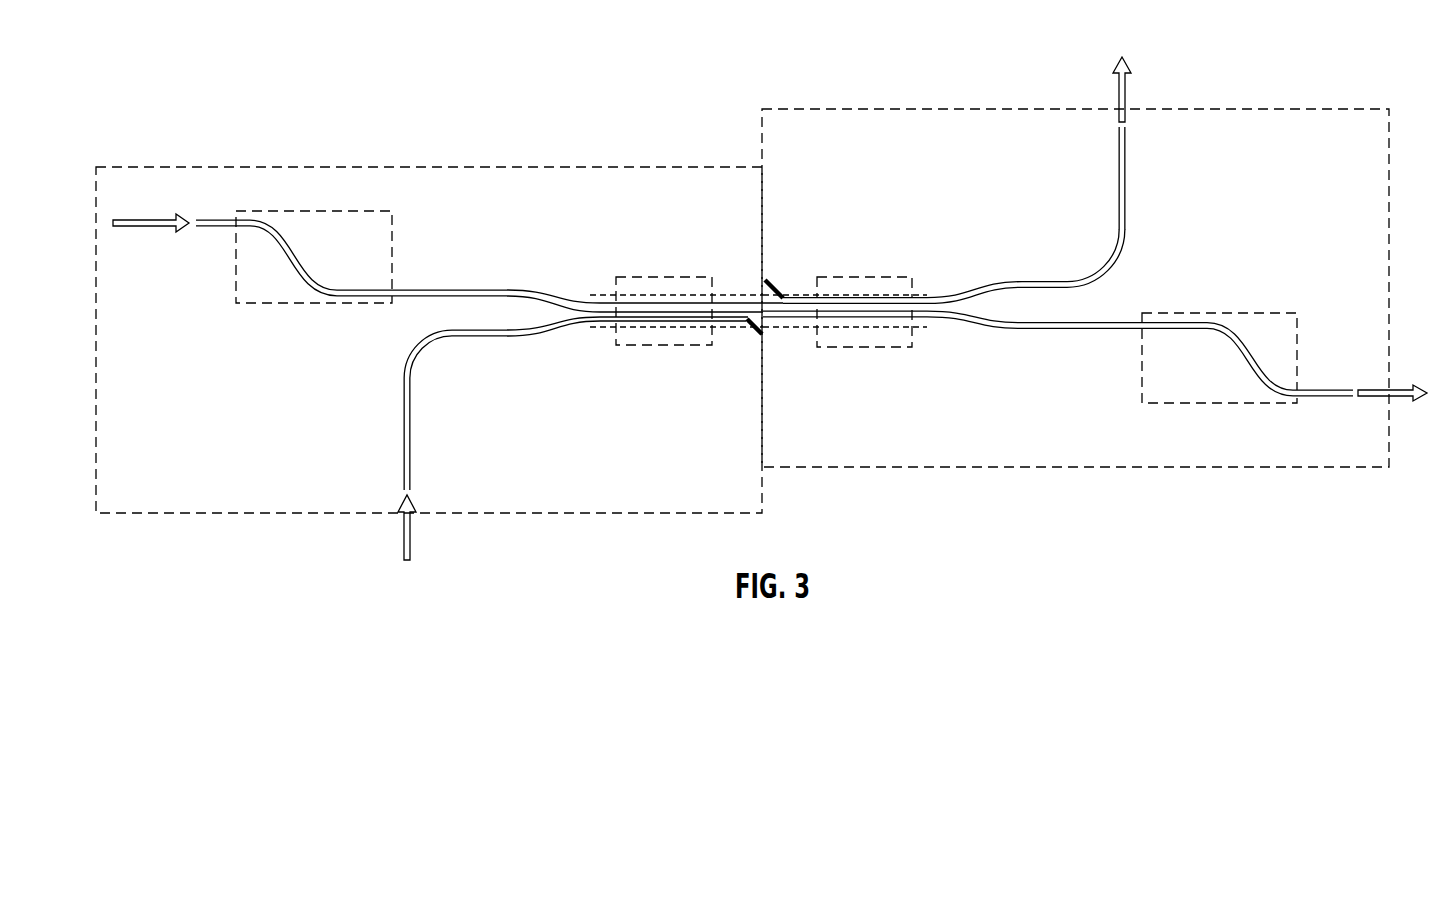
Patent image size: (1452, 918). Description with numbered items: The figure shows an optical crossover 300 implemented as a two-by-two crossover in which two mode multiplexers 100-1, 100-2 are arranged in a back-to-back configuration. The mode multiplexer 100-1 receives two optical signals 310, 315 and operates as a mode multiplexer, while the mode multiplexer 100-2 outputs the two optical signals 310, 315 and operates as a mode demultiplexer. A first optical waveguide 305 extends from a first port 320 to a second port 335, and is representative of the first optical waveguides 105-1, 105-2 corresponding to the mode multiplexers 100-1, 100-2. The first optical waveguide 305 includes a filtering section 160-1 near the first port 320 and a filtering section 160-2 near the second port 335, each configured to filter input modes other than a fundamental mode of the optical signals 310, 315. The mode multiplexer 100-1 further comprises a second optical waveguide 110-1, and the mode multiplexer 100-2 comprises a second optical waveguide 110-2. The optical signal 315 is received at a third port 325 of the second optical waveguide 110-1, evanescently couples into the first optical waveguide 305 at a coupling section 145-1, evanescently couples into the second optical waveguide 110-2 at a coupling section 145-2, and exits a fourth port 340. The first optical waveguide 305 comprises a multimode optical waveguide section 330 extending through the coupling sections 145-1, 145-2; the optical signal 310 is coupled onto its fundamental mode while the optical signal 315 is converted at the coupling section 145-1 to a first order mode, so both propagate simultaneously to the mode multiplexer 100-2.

The optical crossover 300 is at (1304, 47).
The mode multiplexer 100-1 is at (400, 167).
The mode multiplexer 100-2 is at (830, 109).
The first optical waveguide 305 is at (772, 306).
The first optical waveguide 105-1 is at (527, 289).
The first optical waveguide 105-2 is at (980, 323).
The second optical waveguide 110-1 is at (505, 340).
The second optical waveguide 110-2 is at (1127, 240).
The coupling section 145-1 is at (667, 347).
The coupling section 145-2 is at (865, 348).
The filtering section 160-1 is at (263, 304).
The filtering section 160-2 is at (1183, 405).
The optical signal 310 is at (148, 228).
The optical signal 315 is at (403, 533).
The first port 320 is at (208, 228).
The third port 325 is at (403, 443).
The multimode optical waveguide section 330 is at (780, 328).
The second port 335 is at (1333, 397).
The fourth port 340 is at (1117, 162).